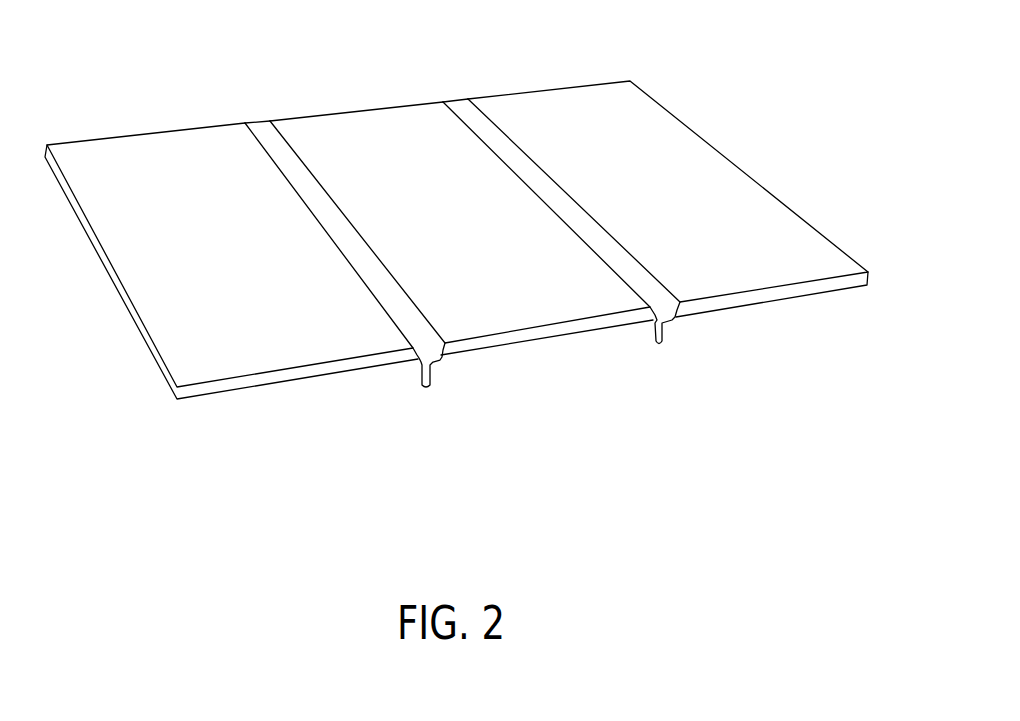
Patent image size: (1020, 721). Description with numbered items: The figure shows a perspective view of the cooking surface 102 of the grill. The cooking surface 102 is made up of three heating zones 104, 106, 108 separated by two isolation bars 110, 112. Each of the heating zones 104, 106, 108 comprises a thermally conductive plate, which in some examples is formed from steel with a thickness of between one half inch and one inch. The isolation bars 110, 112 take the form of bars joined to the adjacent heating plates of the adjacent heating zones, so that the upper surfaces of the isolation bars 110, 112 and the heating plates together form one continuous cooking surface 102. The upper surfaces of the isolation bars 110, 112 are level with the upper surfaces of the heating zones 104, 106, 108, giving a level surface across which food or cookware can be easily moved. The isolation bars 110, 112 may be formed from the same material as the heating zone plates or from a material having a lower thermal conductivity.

The cooking surface 102 is at (772, 29).
The heating zone 104 is at (229, 233).
The heating zone 106 is at (467, 214).
The heating zone 108 is at (673, 203).
The isolation bar 110 is at (344, 255).
The isolation bar 112 is at (622, 245).